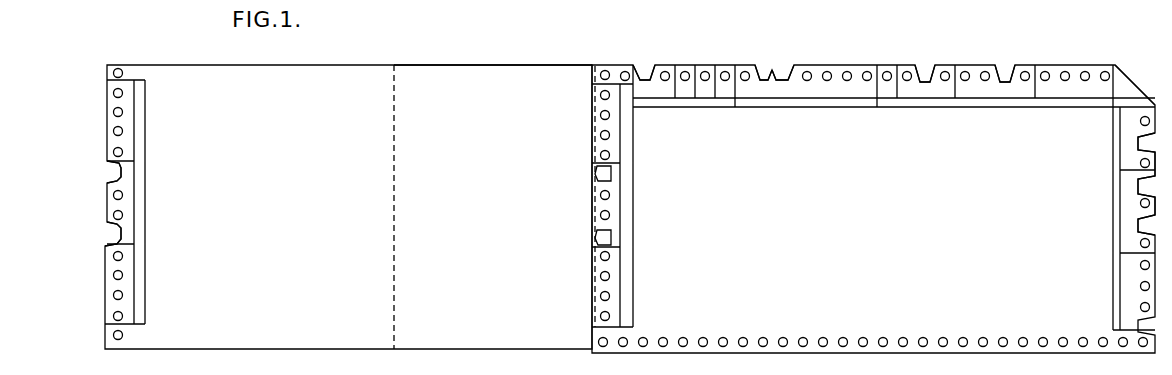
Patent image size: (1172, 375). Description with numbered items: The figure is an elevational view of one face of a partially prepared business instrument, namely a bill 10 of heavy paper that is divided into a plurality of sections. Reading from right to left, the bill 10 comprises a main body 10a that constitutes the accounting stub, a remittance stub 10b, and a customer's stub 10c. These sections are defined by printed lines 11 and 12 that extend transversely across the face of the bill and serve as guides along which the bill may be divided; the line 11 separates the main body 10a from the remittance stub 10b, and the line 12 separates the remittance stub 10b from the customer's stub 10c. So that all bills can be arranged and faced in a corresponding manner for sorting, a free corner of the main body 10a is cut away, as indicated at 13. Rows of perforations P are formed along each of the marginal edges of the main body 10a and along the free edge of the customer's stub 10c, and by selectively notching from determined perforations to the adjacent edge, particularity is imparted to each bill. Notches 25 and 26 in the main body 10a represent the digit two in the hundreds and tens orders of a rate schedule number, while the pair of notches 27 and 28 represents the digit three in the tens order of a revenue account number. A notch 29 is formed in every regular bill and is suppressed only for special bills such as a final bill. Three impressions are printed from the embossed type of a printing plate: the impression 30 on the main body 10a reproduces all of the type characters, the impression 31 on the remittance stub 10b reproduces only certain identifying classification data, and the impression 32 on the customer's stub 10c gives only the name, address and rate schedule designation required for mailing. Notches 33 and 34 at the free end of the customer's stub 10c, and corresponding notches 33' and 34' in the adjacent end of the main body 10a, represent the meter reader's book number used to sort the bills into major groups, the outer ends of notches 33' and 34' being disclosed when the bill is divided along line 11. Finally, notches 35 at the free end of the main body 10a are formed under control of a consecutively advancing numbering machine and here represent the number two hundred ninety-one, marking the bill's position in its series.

The bill 10 is at (535, 52).
The main body 10a is at (880, 50).
The remittance stub 10b is at (462, 58).
The customer's stub 10c is at (229, 56).
The printed line 11 is at (594, 136).
The printed line 12 is at (392, 146).
The cut-away corner 13 is at (1130, 85).
The notch 25 is at (922, 72).
The notch 26 is at (1003, 72).
The notch 27 is at (760, 72).
The notch 28 is at (790, 72).
The notch 29 is at (645, 70).
The impression 30 is at (858, 230).
The impression 31 is at (488, 231).
The impression 32 is at (247, 228).
The notch 33 is at (90, 234).
The notch 34 is at (90, 172).
The notch 33' is at (573, 236).
The notch 34' is at (573, 172).
The notches 35 is at (1138, 140).
The perforations P is at (114, 112).